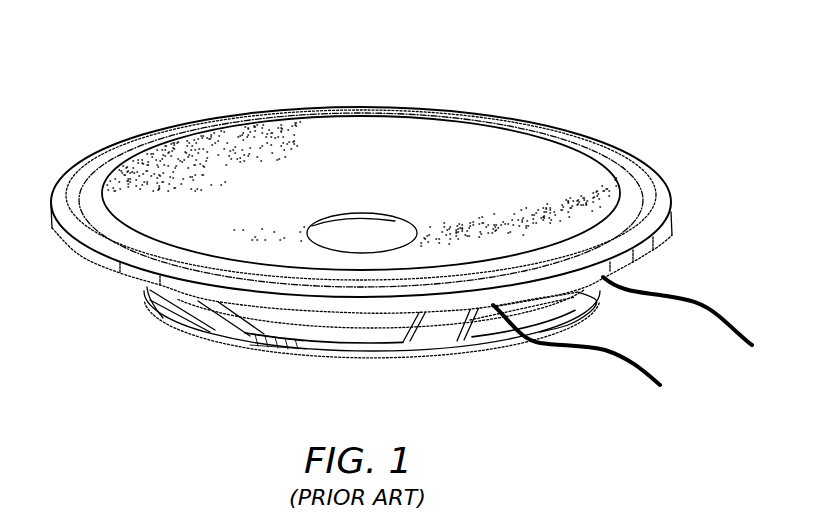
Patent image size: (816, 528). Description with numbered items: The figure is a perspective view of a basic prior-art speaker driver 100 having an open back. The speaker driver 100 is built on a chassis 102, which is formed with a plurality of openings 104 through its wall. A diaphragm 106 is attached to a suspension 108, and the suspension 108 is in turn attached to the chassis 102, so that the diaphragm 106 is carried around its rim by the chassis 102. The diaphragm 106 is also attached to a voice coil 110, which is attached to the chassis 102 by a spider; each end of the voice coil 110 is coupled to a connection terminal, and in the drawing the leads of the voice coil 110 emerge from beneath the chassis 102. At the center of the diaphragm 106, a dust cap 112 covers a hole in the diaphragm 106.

The speaker driver 100 is at (150, 79).
The chassis 102 is at (218, 330).
The openings 104 is at (350, 342).
The diaphragm 106 is at (512, 140).
The suspension 108 is at (93, 256).
The voice coil 110 is at (700, 303).
The dust cap 112 is at (372, 217).